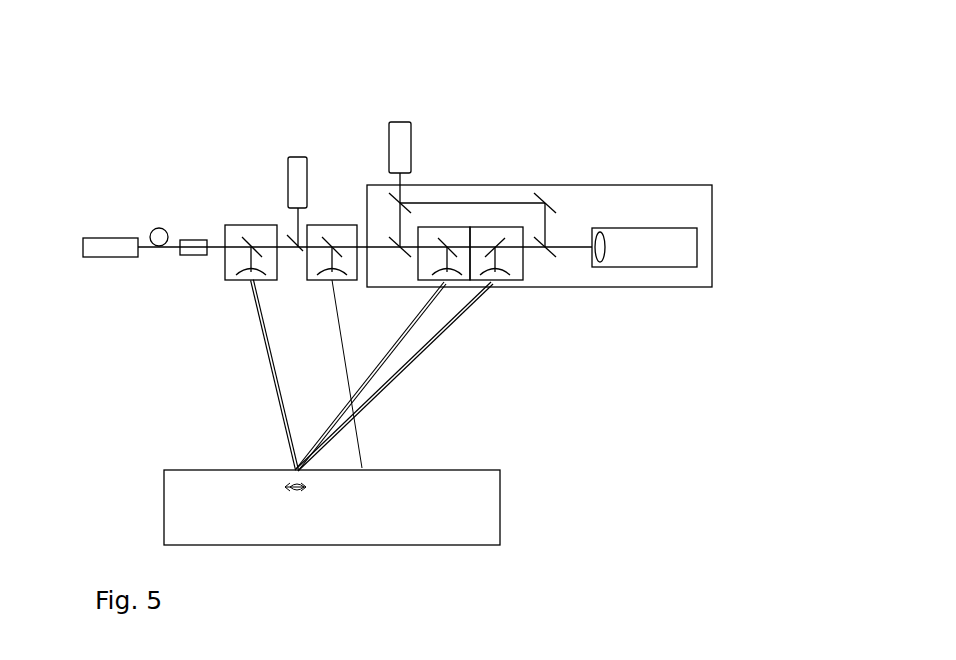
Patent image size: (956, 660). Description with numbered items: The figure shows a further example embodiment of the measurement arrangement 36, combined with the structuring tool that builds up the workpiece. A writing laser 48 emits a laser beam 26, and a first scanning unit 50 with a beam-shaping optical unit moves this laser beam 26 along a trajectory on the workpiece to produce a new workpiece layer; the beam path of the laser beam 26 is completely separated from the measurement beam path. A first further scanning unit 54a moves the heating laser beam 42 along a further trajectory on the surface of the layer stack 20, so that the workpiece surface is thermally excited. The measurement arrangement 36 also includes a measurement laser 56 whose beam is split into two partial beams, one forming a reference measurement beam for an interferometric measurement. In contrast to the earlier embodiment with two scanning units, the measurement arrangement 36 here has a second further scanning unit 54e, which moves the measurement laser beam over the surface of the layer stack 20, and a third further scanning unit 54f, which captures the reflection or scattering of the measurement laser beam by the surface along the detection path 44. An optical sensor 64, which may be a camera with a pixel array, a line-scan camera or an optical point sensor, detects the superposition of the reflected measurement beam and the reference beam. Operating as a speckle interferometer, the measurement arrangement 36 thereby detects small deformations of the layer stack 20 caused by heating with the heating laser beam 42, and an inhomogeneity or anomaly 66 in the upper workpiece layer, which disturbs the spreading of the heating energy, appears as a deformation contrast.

The layer stack 20 is at (500, 500).
The laser beam 26 is at (358, 450).
The measurement arrangement 36 is at (575, 154).
The heating laser beam 42 is at (277, 390).
The detection path 44 is at (400, 370).
The laser 48 is at (105, 258).
The first scanning unit 50 is at (330, 225).
The first further scanning unit 54a is at (240, 224).
The second further scanning unit 54e is at (420, 282).
The third further scanning unit 54f is at (528, 275).
The measurement laser 56 is at (400, 122).
The optical sensor 64 is at (697, 247).
The inhomogeneity/anomaly 66 is at (297, 493).